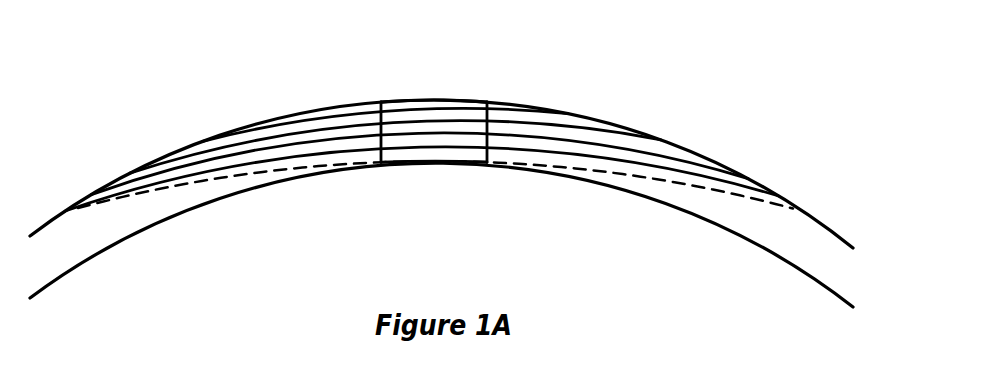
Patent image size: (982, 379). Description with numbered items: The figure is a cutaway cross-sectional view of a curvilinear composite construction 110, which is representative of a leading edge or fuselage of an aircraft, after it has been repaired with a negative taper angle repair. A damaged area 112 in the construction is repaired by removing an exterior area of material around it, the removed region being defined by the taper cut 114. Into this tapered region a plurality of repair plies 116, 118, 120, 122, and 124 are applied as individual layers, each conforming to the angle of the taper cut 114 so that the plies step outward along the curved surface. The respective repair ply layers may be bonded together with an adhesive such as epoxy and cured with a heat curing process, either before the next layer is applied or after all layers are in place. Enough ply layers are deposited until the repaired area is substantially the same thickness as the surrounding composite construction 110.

The curvilinear composite construction 110 is at (684, 33).
The damaged area 112 is at (436, 162).
The taper cut 114 is at (813, 217).
The repair ply 116 is at (770, 197).
The repair ply 118 is at (725, 180).
The repair ply 120 is at (667, 143).
The repair ply 122 is at (543, 118).
The repair ply 124 is at (438, 102).